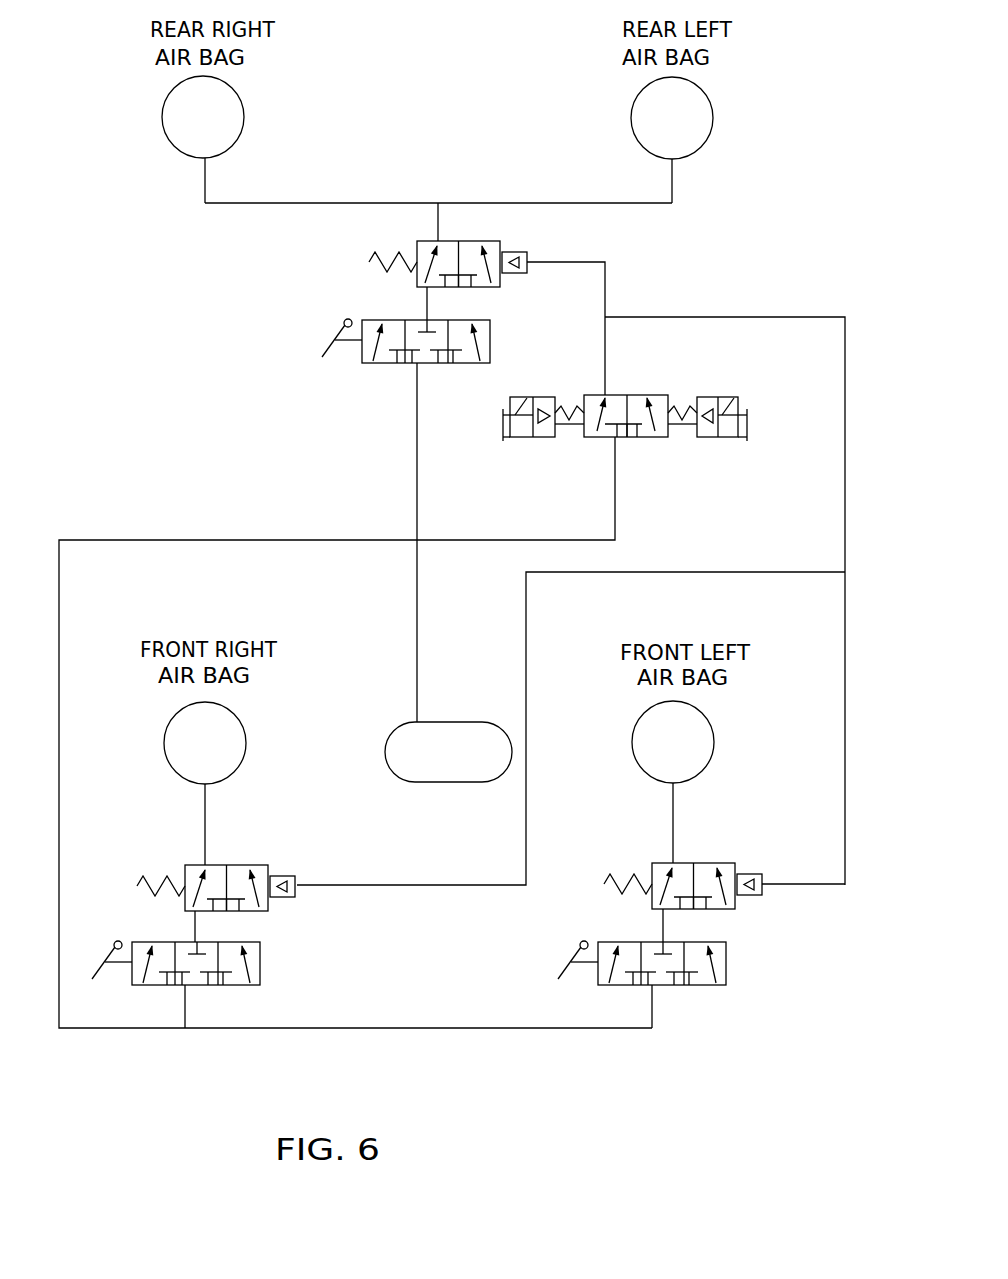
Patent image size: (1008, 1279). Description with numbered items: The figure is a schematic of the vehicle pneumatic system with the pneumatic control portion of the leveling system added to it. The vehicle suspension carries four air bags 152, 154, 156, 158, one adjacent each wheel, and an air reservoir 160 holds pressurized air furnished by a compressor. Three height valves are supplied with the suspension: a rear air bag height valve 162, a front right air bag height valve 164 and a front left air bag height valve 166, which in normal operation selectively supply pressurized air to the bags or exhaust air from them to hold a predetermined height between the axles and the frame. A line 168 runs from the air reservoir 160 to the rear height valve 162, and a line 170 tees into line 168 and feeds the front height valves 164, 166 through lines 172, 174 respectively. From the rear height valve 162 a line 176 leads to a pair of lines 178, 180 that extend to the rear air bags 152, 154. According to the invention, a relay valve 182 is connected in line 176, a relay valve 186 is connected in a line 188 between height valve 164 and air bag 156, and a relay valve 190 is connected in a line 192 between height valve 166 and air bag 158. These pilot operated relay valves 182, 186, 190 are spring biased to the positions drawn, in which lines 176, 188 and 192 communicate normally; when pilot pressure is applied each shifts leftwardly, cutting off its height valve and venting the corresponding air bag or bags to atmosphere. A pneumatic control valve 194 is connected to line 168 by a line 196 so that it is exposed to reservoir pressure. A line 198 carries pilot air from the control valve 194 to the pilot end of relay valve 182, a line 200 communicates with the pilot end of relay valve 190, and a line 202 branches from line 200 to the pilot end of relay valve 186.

The air bag 152 is at (259, 118).
The air bag 154 is at (729, 85).
The air bag 156 is at (256, 750).
The air bag 158 is at (723, 752).
The air reservoir 160 is at (399, 791).
The rear air bag height valve 162 is at (352, 385).
The front right air bag height valve 164 is at (293, 953).
The front left air bag height valve 166 is at (743, 980).
The line 168 is at (417, 602).
The line 170 is at (233, 540).
The line 172 is at (185, 1002).
The line 174 is at (652, 1008).
The line 176 is at (437, 222).
The line 178 is at (280, 203).
The line 180 is at (507, 203).
The relay valve 182 is at (533, 241).
The relay valve 186 is at (271, 855).
The line 188 is at (207, 833).
The relay valve 190 is at (741, 853).
The line 192 is at (672, 810).
The pneumatic control valve 194 is at (672, 363).
The line 196 is at (470, 540).
The line 198 is at (605, 317).
The line 200 is at (846, 412).
The line 202 is at (568, 572).